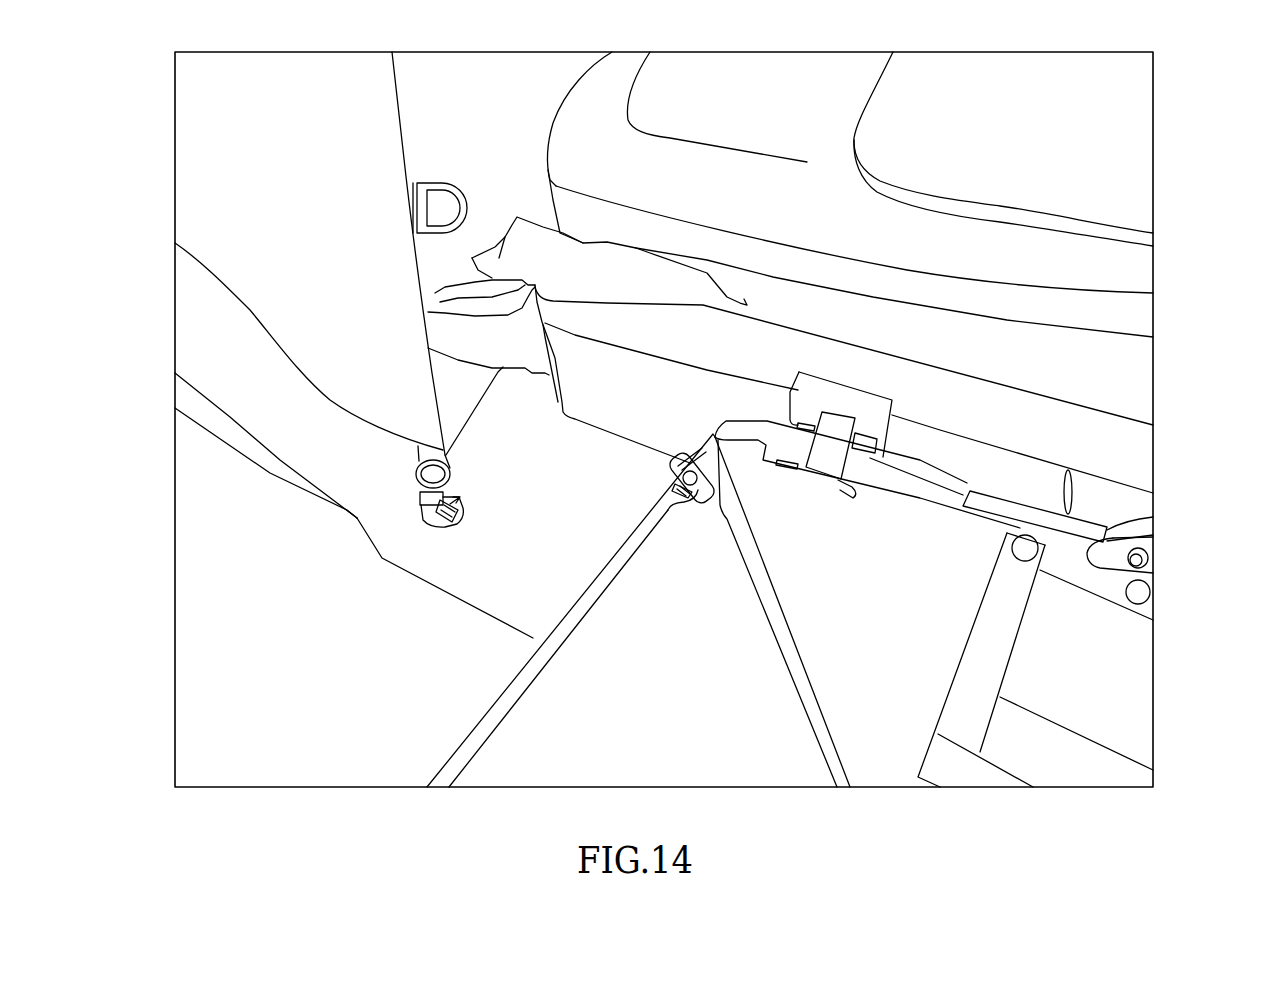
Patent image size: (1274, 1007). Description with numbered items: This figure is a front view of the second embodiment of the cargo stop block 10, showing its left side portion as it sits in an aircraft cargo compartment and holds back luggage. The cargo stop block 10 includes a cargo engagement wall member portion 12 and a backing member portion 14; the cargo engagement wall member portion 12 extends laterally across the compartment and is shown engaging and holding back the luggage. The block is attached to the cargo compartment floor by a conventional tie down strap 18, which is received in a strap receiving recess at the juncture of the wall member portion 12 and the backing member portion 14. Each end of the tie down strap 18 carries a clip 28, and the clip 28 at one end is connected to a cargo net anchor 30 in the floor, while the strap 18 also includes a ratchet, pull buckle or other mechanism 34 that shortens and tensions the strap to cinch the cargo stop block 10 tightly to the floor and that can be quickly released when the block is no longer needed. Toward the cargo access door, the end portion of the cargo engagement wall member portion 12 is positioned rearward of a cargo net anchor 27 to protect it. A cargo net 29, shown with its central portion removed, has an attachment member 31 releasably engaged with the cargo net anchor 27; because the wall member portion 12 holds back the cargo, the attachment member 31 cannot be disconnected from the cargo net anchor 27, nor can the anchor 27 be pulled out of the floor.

The cargo stop block 10 is at (1180, 680).
The cargo engagement wall member portion 12 is at (755, 357).
The backing member portion 14 is at (890, 597).
The tie down strap 18 is at (1023, 518).
The cargo net anchor 27 is at (418, 512).
The clip 28 is at (687, 467).
The cargo net 29 is at (332, 241).
The cargo net anchor 30 is at (673, 490).
The attachment member 31 is at (417, 468).
The ratchet, pull buckle or other mechanism 34 is at (1128, 517).